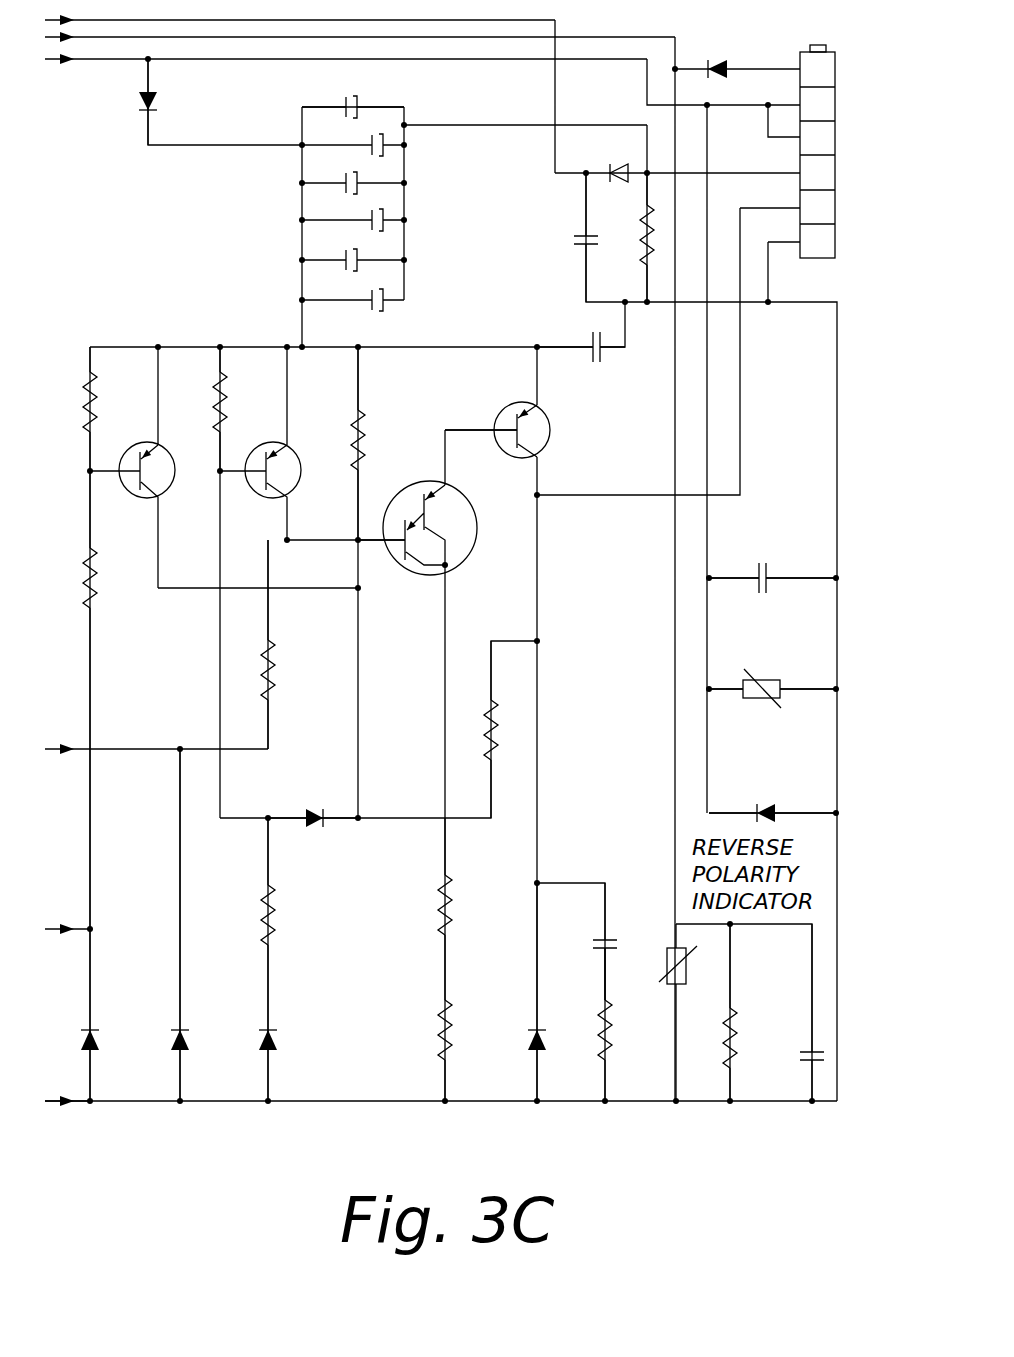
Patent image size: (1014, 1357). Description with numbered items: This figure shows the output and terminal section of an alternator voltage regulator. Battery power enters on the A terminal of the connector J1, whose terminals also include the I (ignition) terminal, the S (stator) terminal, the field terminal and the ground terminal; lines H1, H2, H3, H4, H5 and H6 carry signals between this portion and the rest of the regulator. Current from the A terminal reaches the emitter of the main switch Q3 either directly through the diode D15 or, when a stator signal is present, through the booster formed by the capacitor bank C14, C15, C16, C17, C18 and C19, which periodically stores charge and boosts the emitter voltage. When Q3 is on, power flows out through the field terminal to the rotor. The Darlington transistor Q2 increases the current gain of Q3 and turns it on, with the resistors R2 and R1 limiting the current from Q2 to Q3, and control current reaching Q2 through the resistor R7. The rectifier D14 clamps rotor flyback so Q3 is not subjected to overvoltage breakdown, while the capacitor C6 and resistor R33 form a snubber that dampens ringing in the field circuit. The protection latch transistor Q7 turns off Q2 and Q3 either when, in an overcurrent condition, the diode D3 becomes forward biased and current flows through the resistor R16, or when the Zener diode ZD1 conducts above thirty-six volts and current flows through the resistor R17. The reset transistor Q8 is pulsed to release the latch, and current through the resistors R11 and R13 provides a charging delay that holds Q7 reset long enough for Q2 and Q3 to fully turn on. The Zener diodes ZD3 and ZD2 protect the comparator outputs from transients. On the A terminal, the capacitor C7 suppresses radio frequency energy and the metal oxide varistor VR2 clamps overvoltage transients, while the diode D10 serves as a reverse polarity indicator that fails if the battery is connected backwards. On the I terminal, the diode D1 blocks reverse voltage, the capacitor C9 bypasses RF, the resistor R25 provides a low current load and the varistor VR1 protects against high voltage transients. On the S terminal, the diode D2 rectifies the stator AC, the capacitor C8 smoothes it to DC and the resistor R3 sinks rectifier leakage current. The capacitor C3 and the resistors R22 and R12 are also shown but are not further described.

The input line H1 is at (92, 2).
The input line H2 is at (128, 37).
The input line H3 is at (88, 62).
The input line H4 is at (82, 744).
The input line H5 is at (82, 924).
The input line H6 is at (80, 1096).
The diode D15 is at (118, 102).
The capacitor C14 is at (326, 102).
The capacitor C15 is at (380, 141).
The capacitor C16 is at (326, 179).
The capacitor C17 is at (381, 216).
The capacitor C18 is at (326, 256).
The capacitor C19 is at (380, 295).
The diode D1 is at (737, 55).
The diode D2 is at (677, 157).
The capacitor C8 is at (573, 237).
The resistor R3 is at (628, 237).
The connector J1 is at (838, 136).
The capacitor C3 is at (581, 357).
The resistor R11 is at (92, 396).
The resistor R13 is at (113, 700).
The resistor R22 is at (216, 396).
The resistor R12 is at (382, 443).
The reset transistor Q8 is at (129, 478).
The protection latch transistor Q7 is at (259, 454).
The main switch Q3 is at (515, 434).
The Darlington transistor Q2 is at (407, 525).
The resistor R7 is at (289, 644).
The resistor R16 is at (537, 729).
The diode D3 is at (313, 832).
The resistor R17 is at (295, 924).
The resistor R2 is at (464, 909).
The resistor R1 is at (418, 1050).
The rectifier D14 is at (518, 992).
The capacitor C6 is at (619, 941).
The resistor R33 is at (598, 1044).
The Zener diode ZD3 is at (85, 1034).
The Zener diode ZD2 is at (175, 944).
The Zener diode ZD1 is at (261, 1085).
The capacitor C7 is at (772, 568).
The metal oxide varistor VR2 is at (772, 677).
The reverse polarity indicator diode D10 is at (772, 800).
The metal oxide varistor VR1 is at (676, 1032).
The resistor R25 is at (754, 1012).
The capacitor C9 is at (810, 1032).